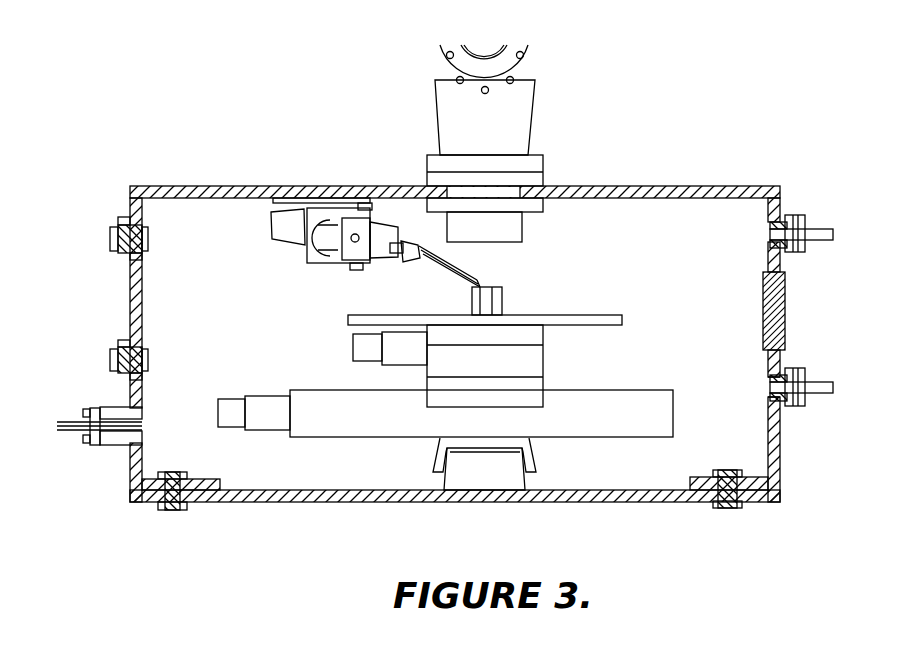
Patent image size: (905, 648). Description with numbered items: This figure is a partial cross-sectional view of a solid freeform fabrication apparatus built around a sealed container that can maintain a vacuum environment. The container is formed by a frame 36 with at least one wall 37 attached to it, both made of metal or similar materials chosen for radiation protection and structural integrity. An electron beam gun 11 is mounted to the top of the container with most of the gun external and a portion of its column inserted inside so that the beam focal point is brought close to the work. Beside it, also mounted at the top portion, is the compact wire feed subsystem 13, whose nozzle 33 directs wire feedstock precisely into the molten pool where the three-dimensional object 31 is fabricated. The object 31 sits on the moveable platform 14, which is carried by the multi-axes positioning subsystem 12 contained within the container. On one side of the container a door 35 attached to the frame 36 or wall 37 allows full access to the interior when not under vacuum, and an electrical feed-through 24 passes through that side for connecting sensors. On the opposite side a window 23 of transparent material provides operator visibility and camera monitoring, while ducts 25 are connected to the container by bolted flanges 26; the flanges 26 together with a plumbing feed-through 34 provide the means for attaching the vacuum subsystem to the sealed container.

The electron beam gun 11 is at (497, 128).
The multi-axes positioning subsystem 12 is at (535, 361).
The wire feed subsystem 13 is at (327, 274).
The moveable platform 14 is at (597, 318).
The window 23 is at (772, 313).
The electrical feed-through 24 is at (98, 457).
The duct 25 is at (818, 234).
The bolted flange 26 is at (814, 213).
The three-dimensional object 31 is at (491, 301).
The nozzle 33 is at (467, 275).
The plumbing feed-through 34 is at (772, 388).
The door 35 is at (123, 280).
The frame 36 is at (233, 188).
The wall 37 is at (362, 497).